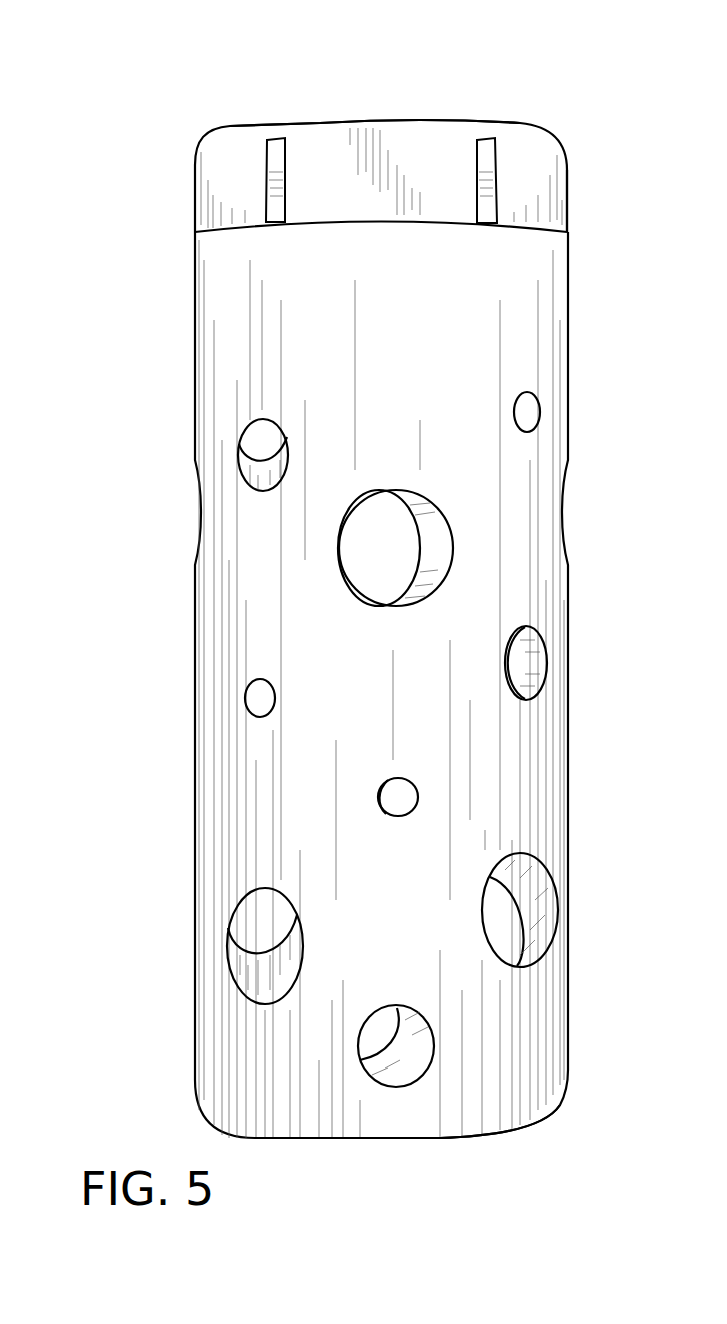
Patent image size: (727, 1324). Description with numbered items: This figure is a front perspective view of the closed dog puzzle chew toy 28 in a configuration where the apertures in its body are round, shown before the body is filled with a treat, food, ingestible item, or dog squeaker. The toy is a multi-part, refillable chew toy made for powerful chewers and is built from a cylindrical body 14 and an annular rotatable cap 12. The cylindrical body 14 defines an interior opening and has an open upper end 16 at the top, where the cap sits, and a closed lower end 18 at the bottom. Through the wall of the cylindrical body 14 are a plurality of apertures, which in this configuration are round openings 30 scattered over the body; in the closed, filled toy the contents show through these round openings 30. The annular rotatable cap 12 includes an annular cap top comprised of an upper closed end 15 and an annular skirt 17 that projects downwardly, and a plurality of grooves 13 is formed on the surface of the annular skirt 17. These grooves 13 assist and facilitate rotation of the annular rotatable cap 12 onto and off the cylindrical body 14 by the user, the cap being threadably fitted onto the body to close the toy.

The filter assembly 28 is at (116, 79).
The annular rotatable cap 12 is at (205, 195).
The upper closed end 15 is at (251, 124).
The grooves 13 is at (277, 162).
The open upper end 16 is at (195, 232).
The annular skirt 17 is at (568, 204).
The cylindrical body 14 is at (232, 632).
The round openings 30 is at (262, 437).
The closed lower end 18 is at (530, 1132).